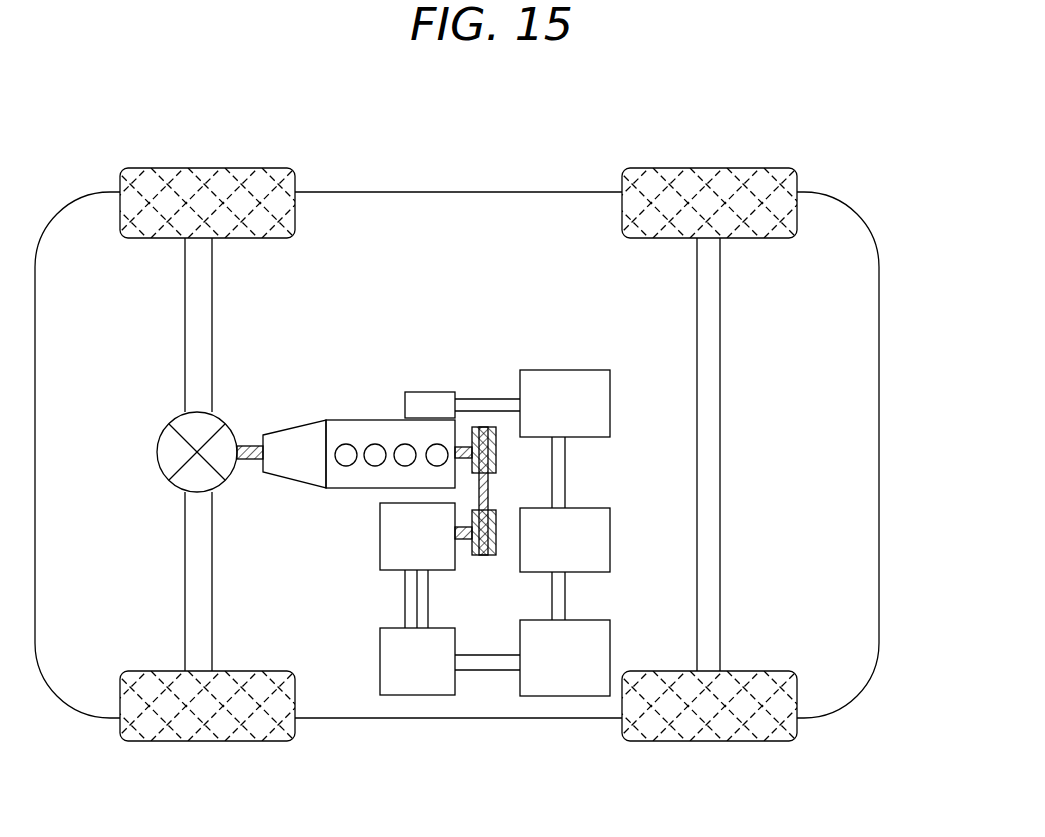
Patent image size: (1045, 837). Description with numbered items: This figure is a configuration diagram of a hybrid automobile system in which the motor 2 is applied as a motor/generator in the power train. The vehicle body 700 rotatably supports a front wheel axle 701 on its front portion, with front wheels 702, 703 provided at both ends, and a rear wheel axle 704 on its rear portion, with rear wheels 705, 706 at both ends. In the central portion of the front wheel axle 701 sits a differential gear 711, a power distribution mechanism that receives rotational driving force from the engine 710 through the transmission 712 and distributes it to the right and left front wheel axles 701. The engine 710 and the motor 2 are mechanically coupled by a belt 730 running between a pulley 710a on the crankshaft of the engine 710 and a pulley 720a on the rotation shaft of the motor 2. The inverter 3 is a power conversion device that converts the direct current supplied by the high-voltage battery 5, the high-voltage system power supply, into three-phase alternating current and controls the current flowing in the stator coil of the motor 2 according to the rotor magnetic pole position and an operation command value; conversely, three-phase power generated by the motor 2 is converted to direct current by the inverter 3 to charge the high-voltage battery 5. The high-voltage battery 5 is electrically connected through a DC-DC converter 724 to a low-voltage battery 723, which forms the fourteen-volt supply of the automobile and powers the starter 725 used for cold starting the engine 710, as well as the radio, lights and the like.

The vehicle body 700 is at (880, 348).
The front wheel axle 701 is at (182, 333).
The front wheel 702 is at (208, 168).
The front wheel 703 is at (208, 742).
The rear wheel axle 704 is at (722, 450).
The rear wheel 705 is at (708, 168).
The rear wheel 706 is at (712, 742).
The engine 710 is at (365, 418).
The pulley 710a is at (462, 442).
The differential gear 711 is at (157, 460).
The transmission 712 is at (288, 430).
The pulley 720a is at (462, 560).
The low-voltage battery 723 is at (562, 370).
The DC-DC converter 724 is at (612, 537).
The starter 725 is at (430, 390).
The belt 730 is at (488, 492).
The motor 2 is at (380, 536).
The inverter 3 is at (380, 650).
The high-voltage battery 5 is at (567, 700).